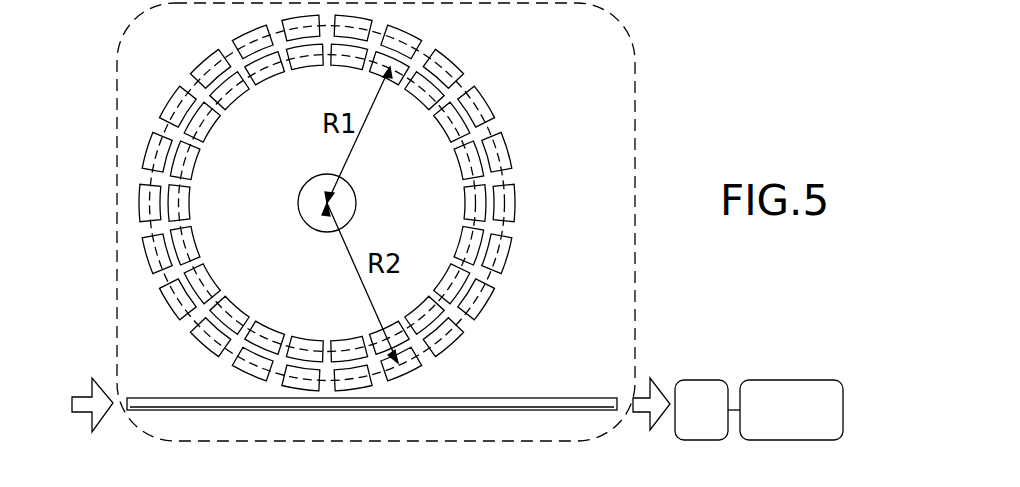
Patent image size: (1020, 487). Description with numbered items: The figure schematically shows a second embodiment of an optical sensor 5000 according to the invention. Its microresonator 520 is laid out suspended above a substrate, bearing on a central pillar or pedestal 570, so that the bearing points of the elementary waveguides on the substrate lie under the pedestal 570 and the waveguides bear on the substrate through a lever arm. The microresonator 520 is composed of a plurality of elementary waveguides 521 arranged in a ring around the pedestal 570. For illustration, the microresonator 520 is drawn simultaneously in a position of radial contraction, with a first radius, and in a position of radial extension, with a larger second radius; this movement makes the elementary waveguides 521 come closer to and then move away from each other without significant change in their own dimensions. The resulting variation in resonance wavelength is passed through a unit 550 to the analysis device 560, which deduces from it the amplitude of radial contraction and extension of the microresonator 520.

The optical sensor 5000 is at (672, 42).
The central pillar 570 is at (117, 63).
The microresonator 520 is at (457, 55).
The elementary waveguides 521 is at (512, 203).
The processing unit 550 is at (695, 385).
The analysis device 560 is at (788, 385).